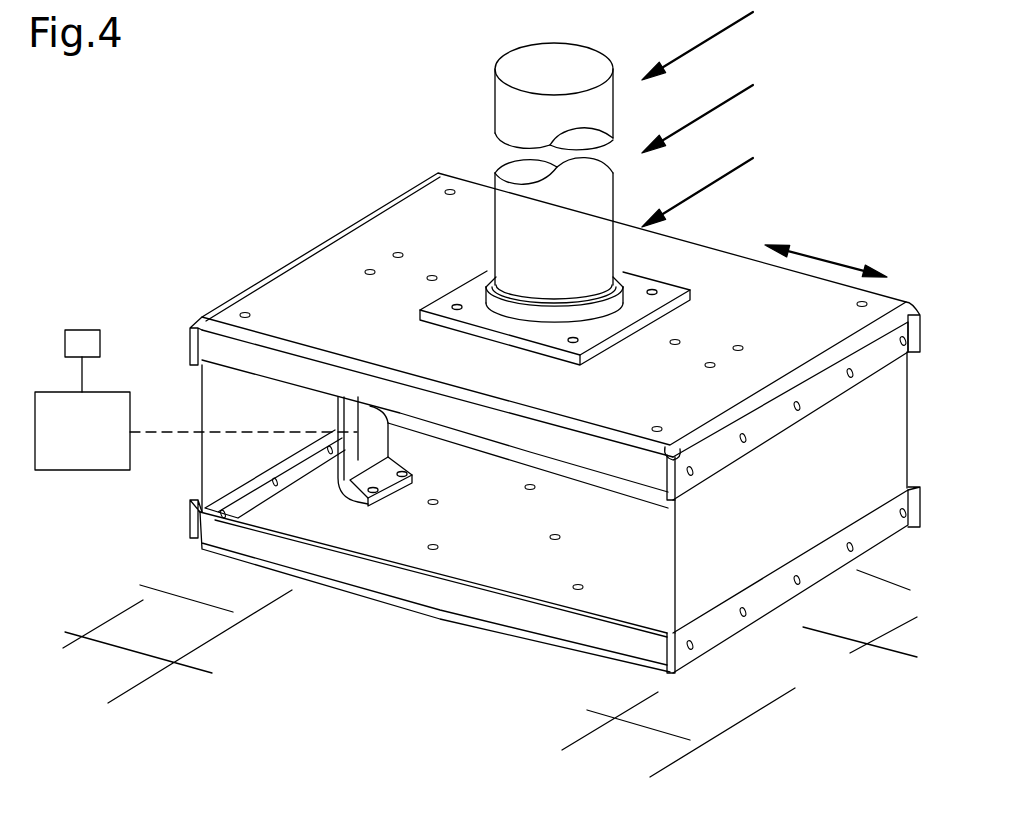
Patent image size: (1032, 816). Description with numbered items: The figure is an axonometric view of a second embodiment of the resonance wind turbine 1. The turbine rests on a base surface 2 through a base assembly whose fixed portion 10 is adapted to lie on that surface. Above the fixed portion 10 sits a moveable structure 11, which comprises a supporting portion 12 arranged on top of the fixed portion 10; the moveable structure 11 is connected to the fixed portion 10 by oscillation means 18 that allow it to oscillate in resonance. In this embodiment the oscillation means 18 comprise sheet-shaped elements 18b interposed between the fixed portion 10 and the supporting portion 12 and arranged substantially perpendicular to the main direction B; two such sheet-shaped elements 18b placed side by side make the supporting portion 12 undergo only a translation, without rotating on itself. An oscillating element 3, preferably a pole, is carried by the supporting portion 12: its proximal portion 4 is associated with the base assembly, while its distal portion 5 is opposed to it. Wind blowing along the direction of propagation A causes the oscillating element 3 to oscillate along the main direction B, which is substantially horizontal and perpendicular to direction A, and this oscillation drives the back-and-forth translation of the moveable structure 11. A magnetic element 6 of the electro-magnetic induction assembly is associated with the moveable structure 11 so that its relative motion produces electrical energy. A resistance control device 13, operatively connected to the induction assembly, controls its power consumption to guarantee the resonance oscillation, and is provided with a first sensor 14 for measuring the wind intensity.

The resonance wind turbine 1 is at (278, 100).
The base surface 2 is at (692, 716).
The oscillating element 3 is at (495, 173).
The proximal portion 4 is at (600, 292).
The distal portion 5 is at (510, 106).
The magnetic element 6 is at (547, 465).
The fixed portion 10 is at (398, 527).
The moveable structure 11 is at (555, 334).
The supporting portion 12 is at (337, 264).
The resistance control device 13 is at (96, 453).
The first sensor 14 is at (88, 330).
The oscillation means 18 is at (497, 592).
The sheet-shaped element 18b is at (225, 445).
The direction of propagation A is at (730, 100).
The main direction B is at (827, 257).